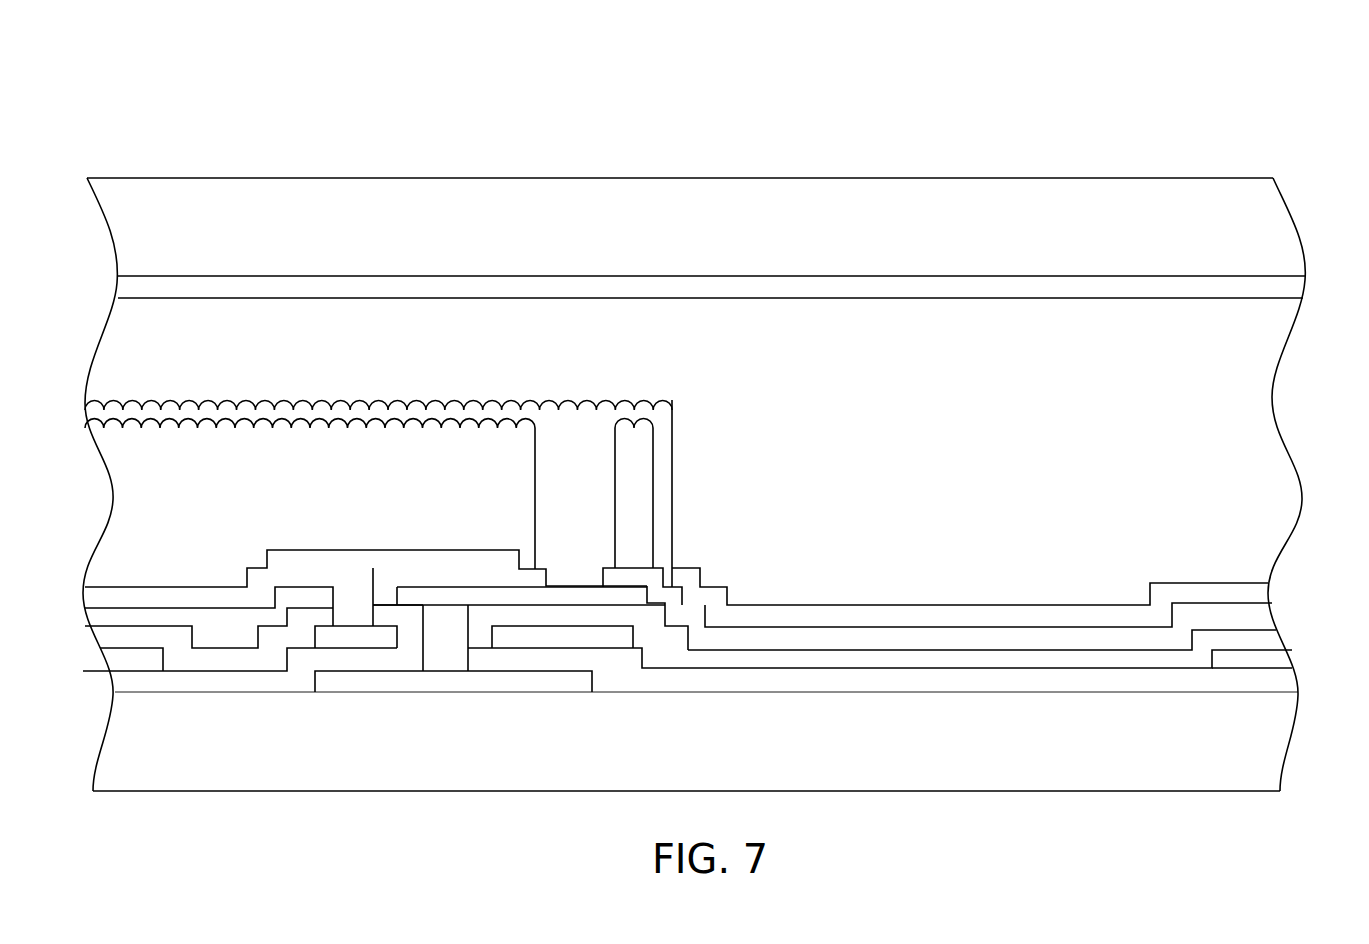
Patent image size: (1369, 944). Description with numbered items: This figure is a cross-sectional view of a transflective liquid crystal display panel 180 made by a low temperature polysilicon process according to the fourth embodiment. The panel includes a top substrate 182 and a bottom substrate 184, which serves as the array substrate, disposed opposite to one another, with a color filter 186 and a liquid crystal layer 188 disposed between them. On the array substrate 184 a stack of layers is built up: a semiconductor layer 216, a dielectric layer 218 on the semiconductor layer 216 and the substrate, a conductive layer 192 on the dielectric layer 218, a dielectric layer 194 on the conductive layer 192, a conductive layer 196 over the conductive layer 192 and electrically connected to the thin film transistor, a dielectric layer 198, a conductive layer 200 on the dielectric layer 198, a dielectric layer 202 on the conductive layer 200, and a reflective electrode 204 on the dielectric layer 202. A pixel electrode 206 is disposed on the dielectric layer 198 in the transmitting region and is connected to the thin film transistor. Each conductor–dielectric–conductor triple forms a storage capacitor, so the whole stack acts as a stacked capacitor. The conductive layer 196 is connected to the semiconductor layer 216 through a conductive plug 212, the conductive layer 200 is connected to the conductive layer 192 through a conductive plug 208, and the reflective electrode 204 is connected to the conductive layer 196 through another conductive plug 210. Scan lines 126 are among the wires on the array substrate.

The transflective liquid crystal display panel 180 is at (1130, 105).
The top substrate 182 is at (1258, 229).
The bottom substrate 184 is at (1286, 748).
The color filter 186 is at (1272, 286).
The liquid crystal layer 188 is at (1268, 462).
The conductive layer 192 is at (327, 638).
The dielectric layer 194 is at (115, 644).
The conductive layer 196 is at (565, 593).
The dielectric layer 198 is at (115, 620).
The conductive layer 200 is at (115, 595).
The dielectric layer 202 is at (123, 500).
The reflective electrode 204 is at (86, 417).
The pixel electrode 206 is at (1264, 595).
The conductive plug 208 is at (355, 603).
The conductive plug 210 is at (607, 524).
The conductive plug 212 is at (445, 650).
The semiconductor layer 216 is at (503, 685).
The dielectric layer 218 is at (1266, 690).
The scan lines 126 is at (135, 658).